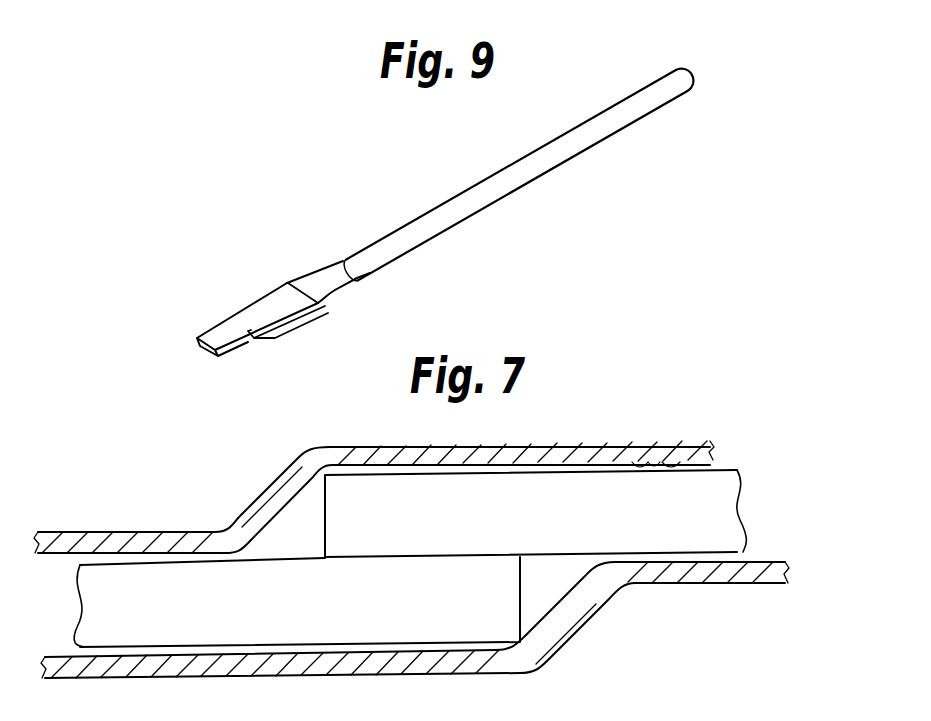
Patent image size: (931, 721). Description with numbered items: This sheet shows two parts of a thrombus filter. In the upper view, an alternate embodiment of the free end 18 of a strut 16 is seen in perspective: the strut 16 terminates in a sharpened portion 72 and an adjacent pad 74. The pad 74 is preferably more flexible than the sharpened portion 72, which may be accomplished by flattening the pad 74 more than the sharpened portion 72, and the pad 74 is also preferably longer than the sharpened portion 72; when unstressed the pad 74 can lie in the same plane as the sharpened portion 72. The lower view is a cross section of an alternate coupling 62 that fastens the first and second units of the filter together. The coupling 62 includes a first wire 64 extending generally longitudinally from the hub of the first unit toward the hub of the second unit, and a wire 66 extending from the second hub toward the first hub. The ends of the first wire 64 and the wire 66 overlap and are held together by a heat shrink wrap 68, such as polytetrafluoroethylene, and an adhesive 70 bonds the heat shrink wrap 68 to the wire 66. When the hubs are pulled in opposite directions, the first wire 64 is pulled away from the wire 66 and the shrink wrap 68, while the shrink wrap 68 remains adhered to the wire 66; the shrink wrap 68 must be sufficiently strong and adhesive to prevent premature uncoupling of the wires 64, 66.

In FIG. 9, the strut 16 is at (528, 156).
In FIG. 9, the free end 18 is at (318, 272).
In FIG. 9, the pad 74 is at (222, 323).
In FIG. 9, the sharpened portion 72 is at (281, 320).
In FIG. 7, the coupling 62 is at (616, 412).
In FIG. 7, the first wire 64 is at (100, 590).
In FIG. 7, the wire 66 is at (700, 523).
In FIG. 7, the heat shrink wrap 68 is at (495, 660).
In FIG. 7, the adhesive 70 is at (687, 440).